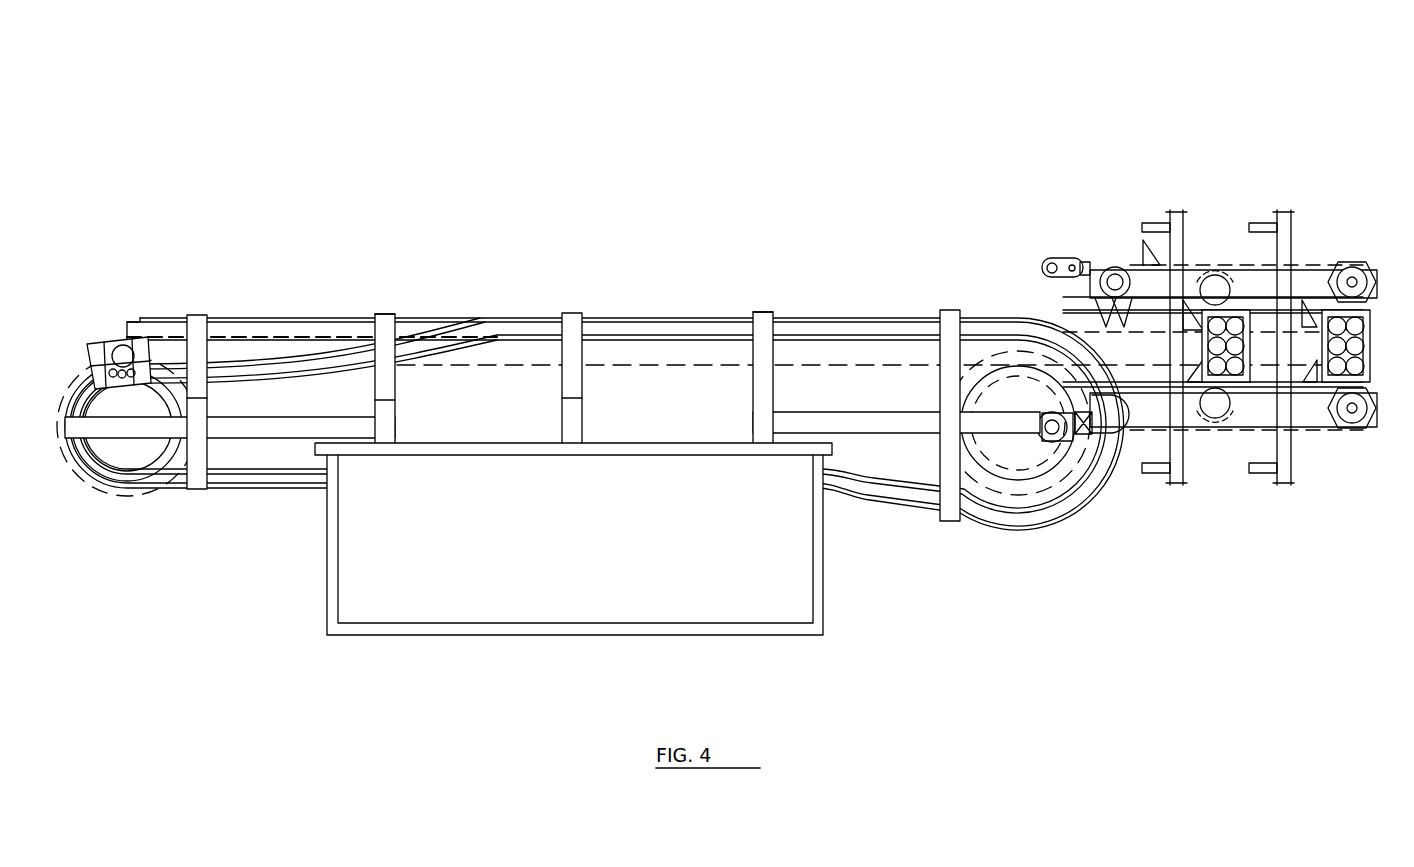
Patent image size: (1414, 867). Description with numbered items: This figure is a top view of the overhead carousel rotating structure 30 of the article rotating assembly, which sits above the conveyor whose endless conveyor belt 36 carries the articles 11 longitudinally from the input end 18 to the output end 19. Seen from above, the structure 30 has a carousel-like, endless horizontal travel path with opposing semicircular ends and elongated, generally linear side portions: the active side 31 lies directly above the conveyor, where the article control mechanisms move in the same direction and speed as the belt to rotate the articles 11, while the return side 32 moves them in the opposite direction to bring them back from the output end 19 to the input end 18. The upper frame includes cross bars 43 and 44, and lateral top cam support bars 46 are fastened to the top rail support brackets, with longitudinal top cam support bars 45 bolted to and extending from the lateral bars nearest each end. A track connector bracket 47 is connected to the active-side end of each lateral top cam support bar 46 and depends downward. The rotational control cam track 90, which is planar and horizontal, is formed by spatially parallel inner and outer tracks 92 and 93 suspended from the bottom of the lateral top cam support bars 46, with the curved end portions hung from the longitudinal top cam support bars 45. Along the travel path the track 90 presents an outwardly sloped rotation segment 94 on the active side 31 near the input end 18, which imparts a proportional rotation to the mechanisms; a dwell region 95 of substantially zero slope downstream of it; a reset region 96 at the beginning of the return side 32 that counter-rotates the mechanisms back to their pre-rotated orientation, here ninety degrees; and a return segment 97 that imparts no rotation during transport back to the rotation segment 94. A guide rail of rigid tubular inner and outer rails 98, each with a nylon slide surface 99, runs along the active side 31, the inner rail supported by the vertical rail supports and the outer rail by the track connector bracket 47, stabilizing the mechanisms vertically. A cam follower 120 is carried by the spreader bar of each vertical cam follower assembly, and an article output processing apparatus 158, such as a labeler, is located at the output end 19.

The article 11 is at (1377, 367).
The input end 18 is at (57, 166).
The output end 19 is at (1220, 170).
The carousel rotating structure 30 is at (158, 231).
The active side 31 is at (86, 248).
The return side 32 is at (128, 548).
The conveyor belt 36 is at (341, 338).
The cross bar 43 is at (692, 446).
The cross bar 44 is at (340, 565).
The longitudinal top cam support bar 45 is at (337, 430).
The lateral top cam support bar 46 is at (208, 397).
The track connector bracket 47 is at (195, 316).
The rotational control cam track 90 is at (283, 515).
The inner track 92 is at (470, 345).
The outer track 93 is at (447, 328).
The rotation segment 94 is at (388, 238).
The dwell region 95 is at (758, 248).
The reset region 96 is at (897, 532).
The return segment 97 is at (571, 505).
The rail 98 is at (243, 328).
The nylon slide surface 99 is at (298, 334).
The cam follower 120 is at (113, 340).
The article output processing apparatus 158 is at (1228, 492).